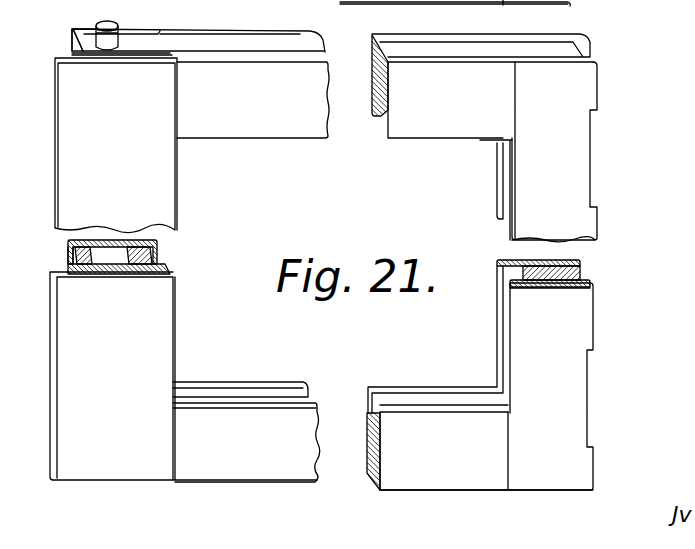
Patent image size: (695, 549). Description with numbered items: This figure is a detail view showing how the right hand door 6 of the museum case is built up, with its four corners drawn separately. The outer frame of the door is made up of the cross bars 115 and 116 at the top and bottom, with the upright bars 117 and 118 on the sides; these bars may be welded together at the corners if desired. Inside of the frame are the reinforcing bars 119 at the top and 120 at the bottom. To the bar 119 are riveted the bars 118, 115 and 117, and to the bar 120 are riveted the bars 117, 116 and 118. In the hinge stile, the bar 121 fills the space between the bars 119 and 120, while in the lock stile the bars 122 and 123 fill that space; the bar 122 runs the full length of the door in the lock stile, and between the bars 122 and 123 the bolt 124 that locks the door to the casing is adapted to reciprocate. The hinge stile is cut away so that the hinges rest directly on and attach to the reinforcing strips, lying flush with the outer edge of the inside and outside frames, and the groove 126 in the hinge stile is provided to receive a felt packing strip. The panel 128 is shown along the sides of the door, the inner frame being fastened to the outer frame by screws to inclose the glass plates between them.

The door 6 is at (580, 163).
The cross bar 115 is at (288, 131).
The cross bar 116 is at (277, 476).
The upright bar 117 is at (165, 53).
The upright bar 118 is at (522, 164).
The reinforcing bar 119 is at (243, 45).
The reinforcing bar 120 is at (271, 386).
The bar 121 is at (517, 260).
The bar 122 is at (90, 40).
The bar 123 is at (152, 256).
The bolt 124 is at (118, 27).
The groove 126 is at (582, 53).
The side panel 128 is at (165, 180).